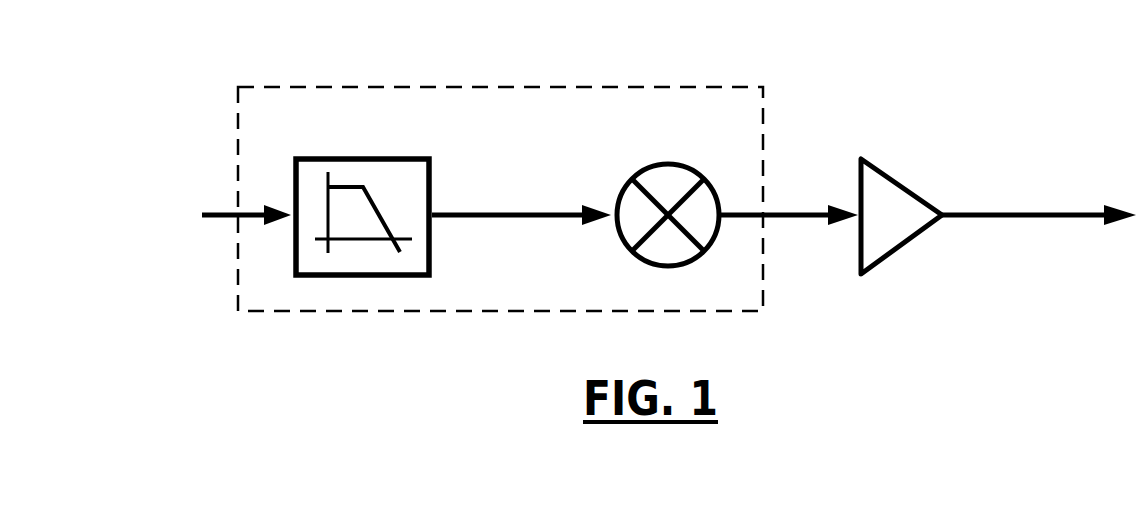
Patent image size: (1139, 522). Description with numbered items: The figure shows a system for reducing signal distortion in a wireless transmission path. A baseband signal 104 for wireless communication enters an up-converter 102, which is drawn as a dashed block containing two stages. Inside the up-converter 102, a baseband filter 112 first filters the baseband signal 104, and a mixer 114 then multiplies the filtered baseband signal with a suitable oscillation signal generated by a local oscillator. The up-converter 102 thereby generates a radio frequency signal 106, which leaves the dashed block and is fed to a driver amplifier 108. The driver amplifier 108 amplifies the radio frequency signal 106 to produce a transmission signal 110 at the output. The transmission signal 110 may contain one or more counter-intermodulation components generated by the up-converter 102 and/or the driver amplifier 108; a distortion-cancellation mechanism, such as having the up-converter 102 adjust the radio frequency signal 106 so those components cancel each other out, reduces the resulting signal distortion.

The up-converter 102 is at (500, 87).
The baseband signal 104 is at (220, 215).
The radio frequency (RF) signal 106 is at (788, 212).
The driver amplifier 108 is at (908, 187).
The transmission signal 110 is at (1027, 212).
The baseband filter 112 is at (433, 160).
The mixer 114 is at (633, 177).